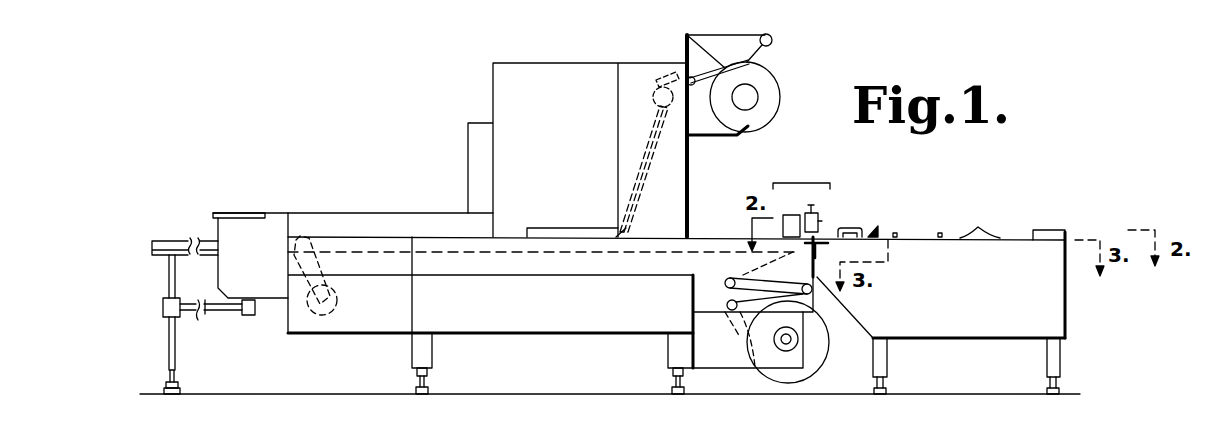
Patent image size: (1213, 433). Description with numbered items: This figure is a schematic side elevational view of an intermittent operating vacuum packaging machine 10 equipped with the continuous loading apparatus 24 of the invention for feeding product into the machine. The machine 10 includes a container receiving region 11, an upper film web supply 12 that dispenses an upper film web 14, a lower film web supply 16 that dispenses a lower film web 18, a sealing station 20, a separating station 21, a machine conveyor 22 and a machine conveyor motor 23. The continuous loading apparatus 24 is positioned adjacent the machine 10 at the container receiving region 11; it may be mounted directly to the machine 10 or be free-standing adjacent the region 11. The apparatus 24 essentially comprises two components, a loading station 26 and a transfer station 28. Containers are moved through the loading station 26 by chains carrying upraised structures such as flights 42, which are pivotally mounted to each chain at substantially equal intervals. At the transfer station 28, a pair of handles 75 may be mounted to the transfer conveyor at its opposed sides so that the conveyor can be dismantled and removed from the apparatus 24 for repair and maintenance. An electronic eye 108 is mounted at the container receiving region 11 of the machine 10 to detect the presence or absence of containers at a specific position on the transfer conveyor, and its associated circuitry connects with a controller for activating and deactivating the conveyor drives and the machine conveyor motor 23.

The intermittent operating vacuum packaging machine 10 is at (426, 128).
The container receiving region 11 is at (800, 182).
The upper film web supply 12 is at (771, 73).
The upper film web 14 is at (682, 58).
The lower film web supply 16 is at (790, 378).
The lower film web 18 is at (740, 337).
The sealing station 20 is at (575, 227).
The separating station 21 is at (375, 170).
The machine conveyor 22 is at (320, 248).
The machine conveyor motor 23 is at (338, 302).
The continuous loading apparatus 24 is at (929, 297).
The loading station 26 is at (1019, 236).
The transfer station 28 is at (877, 232).
The flights 42 is at (978, 227).
The handles 75 is at (849, 228).
The electronic eye 108 is at (818, 210).